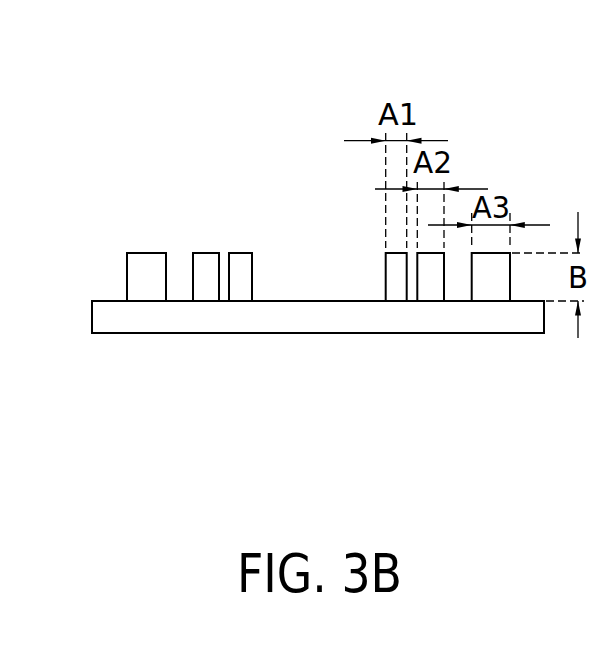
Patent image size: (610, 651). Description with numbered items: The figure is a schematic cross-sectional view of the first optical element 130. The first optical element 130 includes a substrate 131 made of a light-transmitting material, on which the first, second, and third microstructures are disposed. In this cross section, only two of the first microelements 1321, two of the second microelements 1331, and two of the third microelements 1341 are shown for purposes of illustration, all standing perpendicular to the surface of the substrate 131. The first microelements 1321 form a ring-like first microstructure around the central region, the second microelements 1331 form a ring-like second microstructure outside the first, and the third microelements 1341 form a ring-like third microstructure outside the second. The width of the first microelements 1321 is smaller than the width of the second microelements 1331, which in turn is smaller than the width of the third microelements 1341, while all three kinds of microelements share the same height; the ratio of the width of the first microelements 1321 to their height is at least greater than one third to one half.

The first optical element 130 is at (86, 58).
The substrate 131 is at (315, 335).
The first microelements 1321 is at (242, 263).
The second microelements 1331 is at (206, 262).
The third microelements 1341 is at (148, 263).